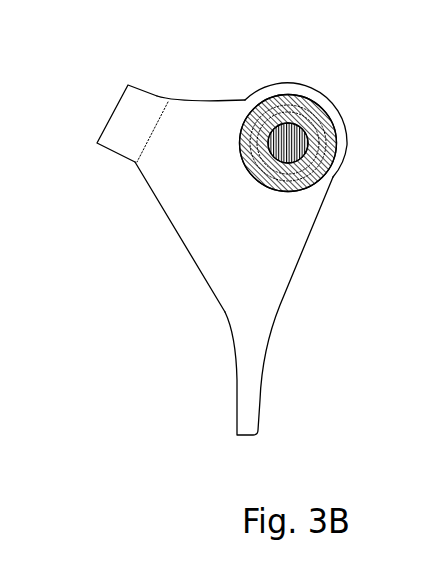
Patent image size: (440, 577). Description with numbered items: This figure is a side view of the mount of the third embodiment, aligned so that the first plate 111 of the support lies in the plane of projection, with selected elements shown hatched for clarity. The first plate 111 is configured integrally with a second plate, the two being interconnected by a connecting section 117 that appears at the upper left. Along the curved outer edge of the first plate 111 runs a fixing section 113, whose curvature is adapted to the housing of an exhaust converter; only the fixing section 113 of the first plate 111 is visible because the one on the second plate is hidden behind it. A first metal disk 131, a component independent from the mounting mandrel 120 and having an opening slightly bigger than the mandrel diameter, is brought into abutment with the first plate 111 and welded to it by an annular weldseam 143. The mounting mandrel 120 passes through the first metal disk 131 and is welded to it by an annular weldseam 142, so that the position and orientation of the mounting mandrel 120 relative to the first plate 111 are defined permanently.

The first plate 111 is at (267, 276).
The fixing section 113 is at (221, 323).
The connecting section 117 is at (112, 113).
The mounting mandrel 120 is at (328, 172).
The first metal disk 131 is at (258, 105).
The annular weldseam 142 is at (337, 135).
The annular weldseam 143 is at (301, 90).